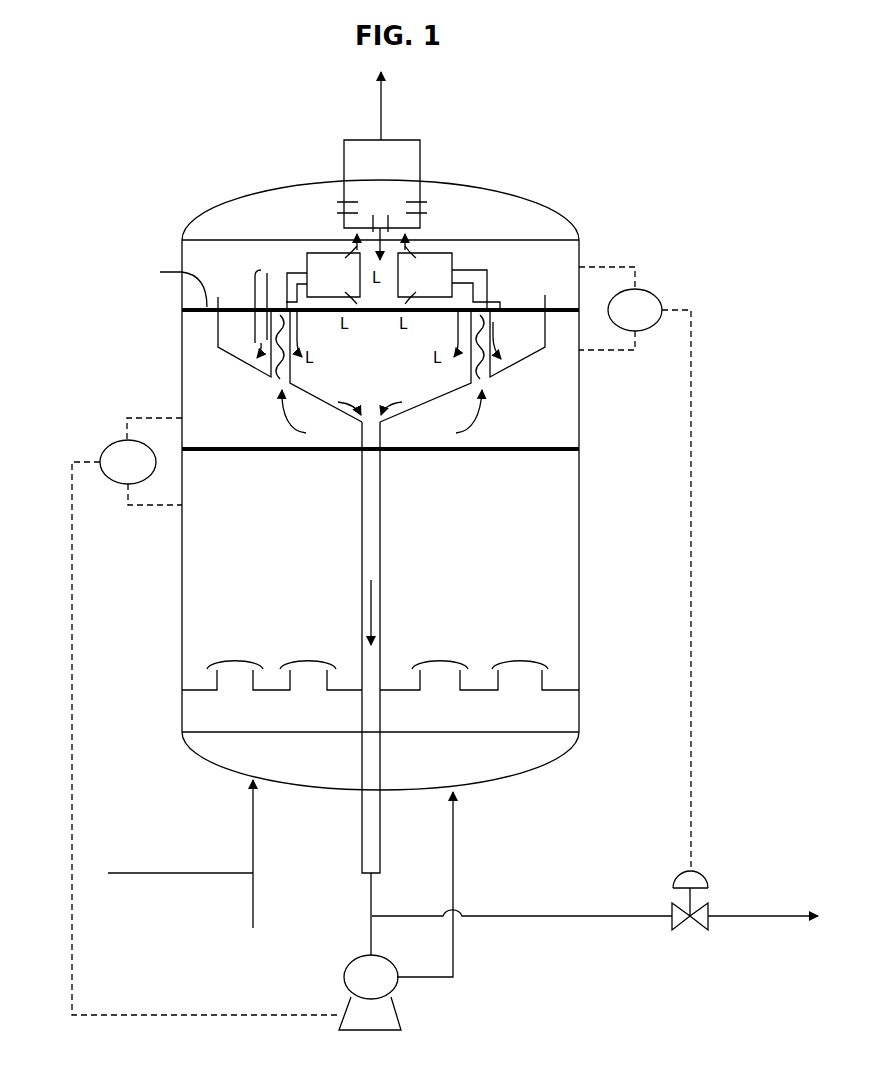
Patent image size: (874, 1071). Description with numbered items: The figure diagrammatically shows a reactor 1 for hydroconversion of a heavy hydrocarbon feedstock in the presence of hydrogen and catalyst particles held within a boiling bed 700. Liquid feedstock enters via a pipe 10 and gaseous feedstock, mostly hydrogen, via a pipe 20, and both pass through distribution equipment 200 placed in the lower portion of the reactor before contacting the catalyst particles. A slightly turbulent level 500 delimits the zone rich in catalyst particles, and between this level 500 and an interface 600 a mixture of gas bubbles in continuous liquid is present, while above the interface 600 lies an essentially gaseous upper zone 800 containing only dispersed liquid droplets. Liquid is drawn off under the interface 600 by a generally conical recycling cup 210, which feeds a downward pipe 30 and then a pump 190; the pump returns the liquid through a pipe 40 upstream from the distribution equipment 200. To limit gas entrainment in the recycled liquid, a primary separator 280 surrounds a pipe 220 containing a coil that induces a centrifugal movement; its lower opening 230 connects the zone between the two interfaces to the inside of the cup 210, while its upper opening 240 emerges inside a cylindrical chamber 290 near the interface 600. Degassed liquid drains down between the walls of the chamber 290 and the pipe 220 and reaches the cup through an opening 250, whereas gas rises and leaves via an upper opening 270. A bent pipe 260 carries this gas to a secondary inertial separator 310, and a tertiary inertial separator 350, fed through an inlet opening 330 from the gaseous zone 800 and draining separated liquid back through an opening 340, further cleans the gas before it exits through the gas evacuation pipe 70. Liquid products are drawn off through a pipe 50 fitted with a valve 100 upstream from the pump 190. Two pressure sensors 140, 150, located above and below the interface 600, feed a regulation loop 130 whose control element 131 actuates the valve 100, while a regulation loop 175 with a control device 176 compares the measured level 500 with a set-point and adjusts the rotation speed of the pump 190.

The reactor 1 is at (207, 210).
The pipe 10 is at (195, 873).
The pipe 20 is at (255, 882).
The downward pipe 30 is at (381, 545).
The pipe 40 is at (455, 883).
The pipe 50 is at (555, 916).
The pipe for evacuating gases 70 is at (382, 130).
The valve 100 is at (700, 903).
The regulation loop 130 is at (692, 378).
The control element 131 is at (651, 320).
The pressure sensor 140 is at (630, 265).
The pressure sensor 150 is at (620, 352).
The regulation loop 175 is at (75, 633).
The control device 176 is at (144, 472).
The pump 190 is at (390, 993).
The equipment 200 is at (286, 695).
The recycling cup 210 is at (265, 370).
The pipe 220 is at (460, 318).
The lower opening 230 is at (483, 375).
The upper opening 240 is at (483, 293).
The opening 250 is at (493, 323).
The pipe 260 is at (470, 270).
The upper opening 270 is at (283, 304).
The primary separator 280 is at (255, 293).
The chamber 290 is at (300, 325).
The secondary inertial separator 310 is at (350, 284).
The inlet opening 330 is at (428, 213).
The opening 340 is at (377, 217).
The tertiary inertial separator 350 is at (398, 191).
The level 500 is at (288, 452).
The interface 600 is at (164, 284).
The boiling bed 700 is at (474, 561).
The upper gas zone 800 is at (316, 225).